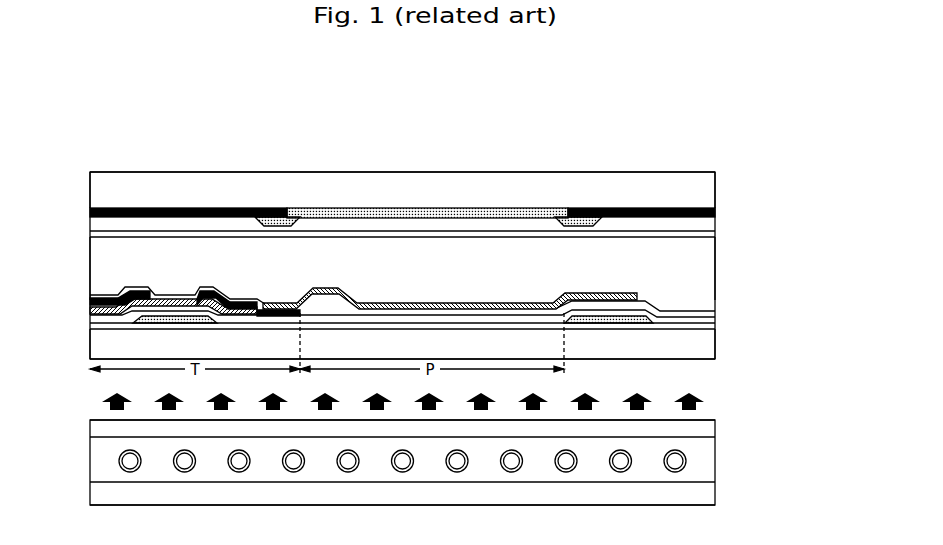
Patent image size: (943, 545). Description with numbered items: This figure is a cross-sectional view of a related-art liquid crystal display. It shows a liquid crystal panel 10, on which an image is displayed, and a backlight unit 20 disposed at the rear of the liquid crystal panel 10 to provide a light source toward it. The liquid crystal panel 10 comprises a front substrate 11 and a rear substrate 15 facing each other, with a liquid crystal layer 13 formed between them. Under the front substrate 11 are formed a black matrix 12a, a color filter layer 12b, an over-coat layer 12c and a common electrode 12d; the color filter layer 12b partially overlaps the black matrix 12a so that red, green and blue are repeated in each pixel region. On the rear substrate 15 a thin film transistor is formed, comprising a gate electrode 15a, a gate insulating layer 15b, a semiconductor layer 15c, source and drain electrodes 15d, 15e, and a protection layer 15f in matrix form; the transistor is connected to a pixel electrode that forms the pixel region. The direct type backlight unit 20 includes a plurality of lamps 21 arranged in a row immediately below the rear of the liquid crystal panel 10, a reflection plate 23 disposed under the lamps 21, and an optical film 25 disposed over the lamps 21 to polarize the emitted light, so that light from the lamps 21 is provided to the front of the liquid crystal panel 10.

The liquid crystal panel 10 is at (809, 187).
The front substrate 11 is at (710, 193).
The black matrix 12a is at (268, 209).
The color filter layer 12b is at (324, 209).
The over-coat layer 12c is at (381, 225).
The common electrode 12d is at (441, 237).
The liquid crystal layer 13 is at (710, 262).
The rear substrate 15 is at (710, 346).
The gate electrode 15a is at (150, 321).
The gate insulating layer 15b is at (102, 322).
The semiconductor layer 15c is at (93, 313).
The source electrode 15d is at (93, 307).
The drain electrode 15e is at (190, 296).
The protection layer 15f is at (98, 298).
The backlight unit 20 is at (809, 417).
The lamps 21 is at (675, 460).
The reflection plate 23 is at (712, 495).
The optical film 25 is at (712, 428).